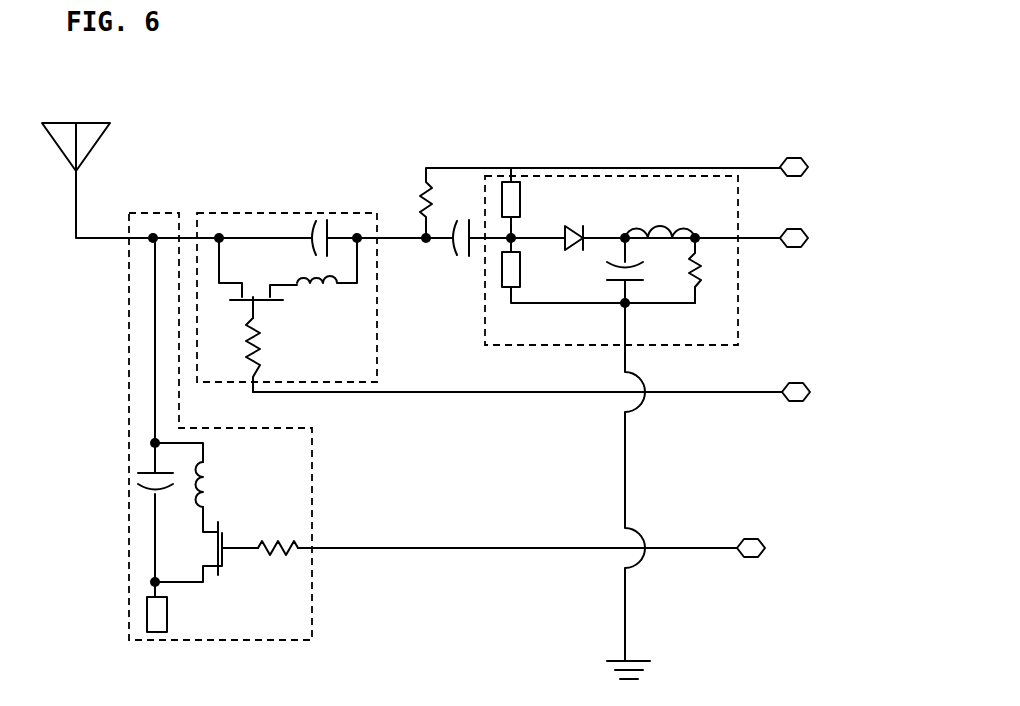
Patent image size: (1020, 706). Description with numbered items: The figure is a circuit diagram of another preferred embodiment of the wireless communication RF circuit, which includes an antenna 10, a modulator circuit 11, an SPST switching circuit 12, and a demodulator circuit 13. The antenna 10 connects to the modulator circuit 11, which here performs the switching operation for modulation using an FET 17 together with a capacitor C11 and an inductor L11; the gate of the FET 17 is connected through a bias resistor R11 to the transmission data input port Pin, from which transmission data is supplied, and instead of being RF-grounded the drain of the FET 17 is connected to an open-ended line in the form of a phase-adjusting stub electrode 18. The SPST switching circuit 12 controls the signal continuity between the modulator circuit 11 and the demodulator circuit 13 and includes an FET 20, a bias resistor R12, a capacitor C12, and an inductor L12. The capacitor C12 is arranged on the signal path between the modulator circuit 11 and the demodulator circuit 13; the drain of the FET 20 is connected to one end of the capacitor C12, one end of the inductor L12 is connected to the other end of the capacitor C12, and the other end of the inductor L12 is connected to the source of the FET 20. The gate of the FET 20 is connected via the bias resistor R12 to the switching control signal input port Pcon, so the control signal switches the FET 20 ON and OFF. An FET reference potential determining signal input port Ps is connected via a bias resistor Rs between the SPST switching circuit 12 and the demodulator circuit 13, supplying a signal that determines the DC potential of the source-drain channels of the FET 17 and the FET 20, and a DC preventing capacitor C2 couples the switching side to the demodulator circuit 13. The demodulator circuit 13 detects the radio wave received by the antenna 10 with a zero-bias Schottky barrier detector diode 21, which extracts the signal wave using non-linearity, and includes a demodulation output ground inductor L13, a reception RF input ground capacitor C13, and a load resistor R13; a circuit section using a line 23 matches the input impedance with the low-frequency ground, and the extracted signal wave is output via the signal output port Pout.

The antenna 10 is at (53, 145).
The modulator circuit 11 is at (129, 300).
The SPST switching circuit 12 is at (218, 212).
The demodulator circuit 13 is at (513, 347).
The FET 17 is at (222, 560).
The stub electrode 18 is at (147, 615).
The FET 20 is at (258, 304).
The diode 21 is at (573, 222).
The line 23 is at (522, 207).
The capacitor C11 is at (145, 470).
The inductor L11 is at (205, 483).
The bias resistor R11 is at (282, 547).
The capacitor C12 is at (330, 217).
The inductor L12 is at (328, 283).
The bias resistor R12 is at (257, 353).
The bias resistor Rs is at (427, 185).
The DC preventing capacitor C2 is at (473, 247).
The reception RF input ground capacitor C13 is at (615, 287).
The demodulation output ground inductor L13 is at (660, 232).
The load resistor R13 is at (707, 267).
The FET reference potential determining signal input port Ps is at (808, 163).
The signal output port Pout is at (808, 234).
The switching control signal input port Pcon is at (810, 388).
The transmission data input port Pin is at (765, 543).